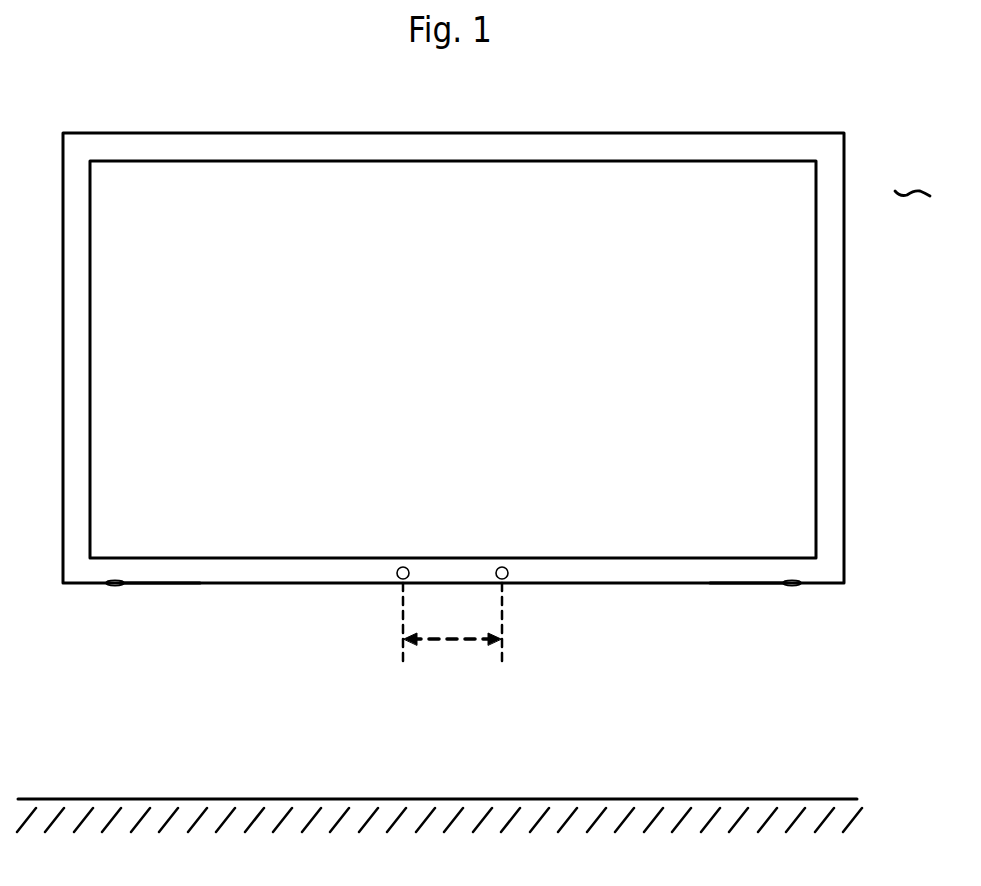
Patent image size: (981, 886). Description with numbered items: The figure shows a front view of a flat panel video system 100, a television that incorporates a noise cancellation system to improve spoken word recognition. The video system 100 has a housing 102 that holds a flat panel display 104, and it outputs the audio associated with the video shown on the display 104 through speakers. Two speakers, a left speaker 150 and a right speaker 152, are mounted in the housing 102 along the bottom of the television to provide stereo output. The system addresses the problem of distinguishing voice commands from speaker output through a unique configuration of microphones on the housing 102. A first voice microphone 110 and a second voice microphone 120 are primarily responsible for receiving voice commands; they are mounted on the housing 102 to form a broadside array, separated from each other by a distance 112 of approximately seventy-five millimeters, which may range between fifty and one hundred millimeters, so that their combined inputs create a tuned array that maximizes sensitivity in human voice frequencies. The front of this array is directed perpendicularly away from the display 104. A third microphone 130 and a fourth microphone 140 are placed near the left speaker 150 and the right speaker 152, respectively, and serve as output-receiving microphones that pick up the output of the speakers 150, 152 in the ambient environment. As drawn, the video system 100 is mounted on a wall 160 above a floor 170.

The flat panel video system 100 is at (453, 336).
The housing 102 is at (575, 133).
The flat panel display 104 is at (331, 161).
The microphone M1 110 is at (397, 573).
The distance 112 is at (456, 642).
The microphone M2 120 is at (508, 574).
The microphone M3 130 is at (114, 589).
The microphone M4 140 is at (790, 589).
The left speaker 150 is at (158, 583).
The right speaker 152 is at (757, 583).
The wall 160 is at (914, 179).
The floor 170 is at (812, 799).